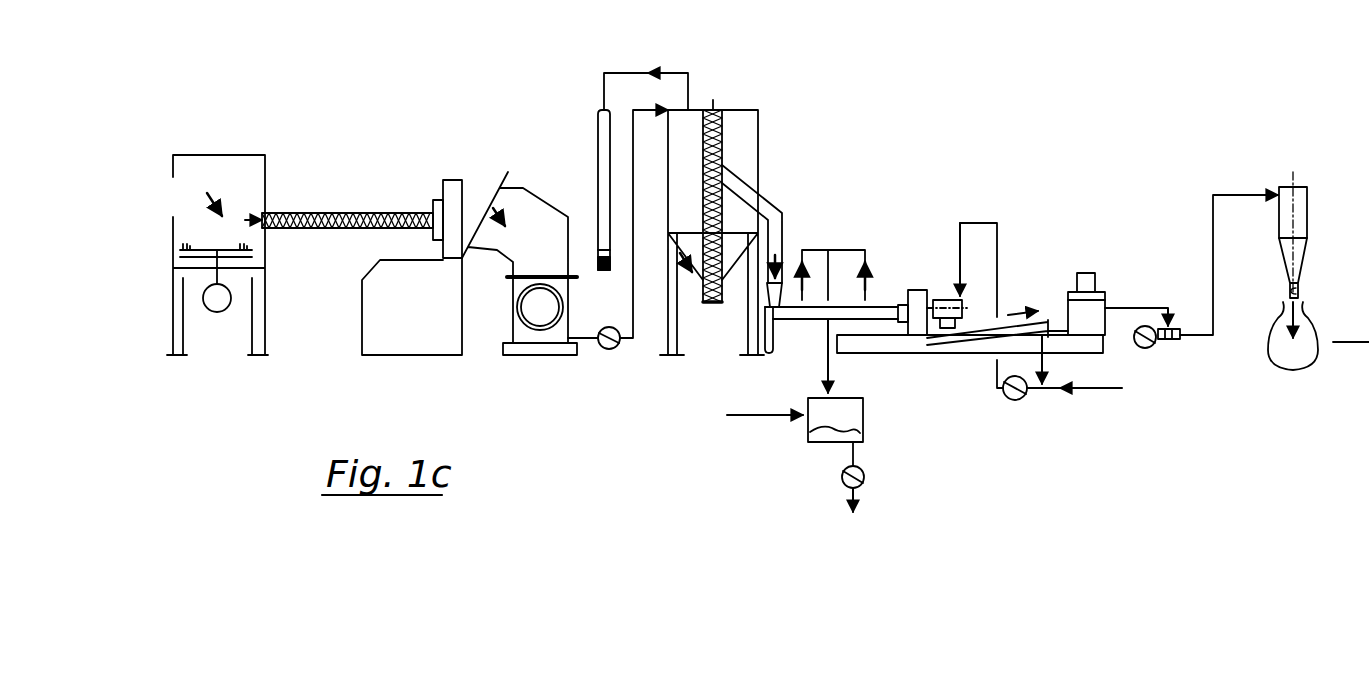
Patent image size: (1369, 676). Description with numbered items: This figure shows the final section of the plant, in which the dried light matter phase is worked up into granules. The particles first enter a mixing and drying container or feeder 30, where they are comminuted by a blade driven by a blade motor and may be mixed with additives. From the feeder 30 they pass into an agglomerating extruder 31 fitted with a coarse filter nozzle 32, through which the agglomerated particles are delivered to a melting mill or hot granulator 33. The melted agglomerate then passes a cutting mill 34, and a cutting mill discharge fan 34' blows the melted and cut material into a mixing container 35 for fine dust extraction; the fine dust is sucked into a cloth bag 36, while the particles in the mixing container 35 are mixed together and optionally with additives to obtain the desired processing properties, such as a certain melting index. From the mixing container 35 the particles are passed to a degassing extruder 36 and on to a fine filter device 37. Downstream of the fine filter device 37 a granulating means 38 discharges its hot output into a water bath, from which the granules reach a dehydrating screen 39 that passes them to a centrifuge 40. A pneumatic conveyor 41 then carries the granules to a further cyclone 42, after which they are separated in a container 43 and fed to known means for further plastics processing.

The mixing and drying container 30 is at (246, 187).
The agglomerating extruder 31 is at (313, 212).
The coarse filter nozzle 32 is at (446, 184).
The melting mill 33 is at (558, 244).
The cutting mill 34 is at (540, 339).
The cutting mill discharge fan 34' is at (618, 256).
The mixing container 35 is at (725, 108).
The cloth bag 36 is at (600, 149).
The fine filter device 37 is at (917, 298).
The granulating means 38 is at (950, 298).
The dehydrating screen 39 is at (1025, 310).
The centrifuge 40 is at (1093, 313).
The pneumatic conveyor 41 is at (1181, 345).
The further cyclone 42 is at (1308, 238).
The container 43 is at (1278, 329).